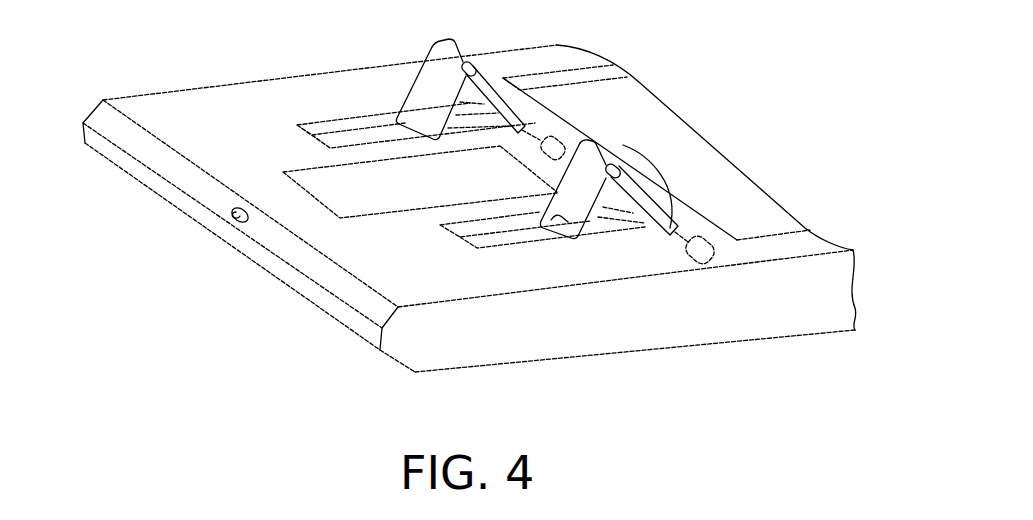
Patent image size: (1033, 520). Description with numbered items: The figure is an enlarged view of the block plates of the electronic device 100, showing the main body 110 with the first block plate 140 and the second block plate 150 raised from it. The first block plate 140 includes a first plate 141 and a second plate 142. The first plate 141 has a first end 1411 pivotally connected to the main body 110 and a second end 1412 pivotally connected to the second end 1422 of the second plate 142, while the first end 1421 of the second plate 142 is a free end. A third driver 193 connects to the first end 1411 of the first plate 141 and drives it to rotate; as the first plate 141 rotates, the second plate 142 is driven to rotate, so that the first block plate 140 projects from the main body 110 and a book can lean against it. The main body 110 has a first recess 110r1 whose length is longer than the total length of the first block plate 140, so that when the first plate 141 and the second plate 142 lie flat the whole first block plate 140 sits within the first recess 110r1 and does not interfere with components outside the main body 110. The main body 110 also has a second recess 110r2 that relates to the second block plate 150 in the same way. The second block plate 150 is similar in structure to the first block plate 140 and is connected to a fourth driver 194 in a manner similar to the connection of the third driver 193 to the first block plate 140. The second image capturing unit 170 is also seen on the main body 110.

The electronic device 100 is at (123, 38).
The main body 110 is at (720, 307).
The first recess 110r1 is at (503, 222).
The second recess 110r2 is at (371, 133).
The first block plate 140 is at (662, 280).
The first plate 141 is at (710, 270).
The first end of the first plate 1411 is at (653, 187).
The second end of the first plate 1412 is at (622, 170).
The second plate 142 is at (637, 257).
The first end of the second plate 1421 is at (553, 213).
The second end of the second plate 1422 is at (600, 143).
The second block plate 150 is at (424, 97).
The second image capturing unit 170 is at (234, 210).
The third driver 193 is at (700, 227).
The fourth driver 194 is at (560, 125).